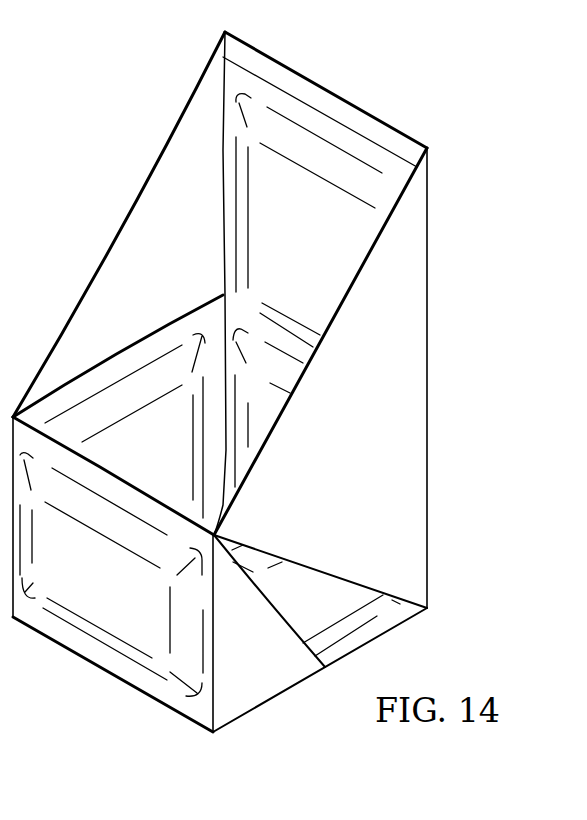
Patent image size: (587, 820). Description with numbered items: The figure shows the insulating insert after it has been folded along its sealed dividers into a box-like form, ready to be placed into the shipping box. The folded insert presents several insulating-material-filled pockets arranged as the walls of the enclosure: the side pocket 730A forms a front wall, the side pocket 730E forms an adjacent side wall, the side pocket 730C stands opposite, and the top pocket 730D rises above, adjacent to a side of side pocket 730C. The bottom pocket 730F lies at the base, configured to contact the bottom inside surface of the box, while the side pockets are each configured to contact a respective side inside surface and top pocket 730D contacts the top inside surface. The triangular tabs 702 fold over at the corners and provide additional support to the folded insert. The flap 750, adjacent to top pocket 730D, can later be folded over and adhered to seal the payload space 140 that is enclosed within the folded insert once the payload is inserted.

The triangular tab 702 is at (135, 228).
The flap 750 is at (360, 127).
The side pocket 730A is at (127, 595).
The side pocket 730C is at (265, 412).
The top pocket 730D is at (337, 258).
The side pocket 730E is at (175, 468).
The bottom pocket 730F is at (327, 597).
The payload space 140 is at (157, 376).